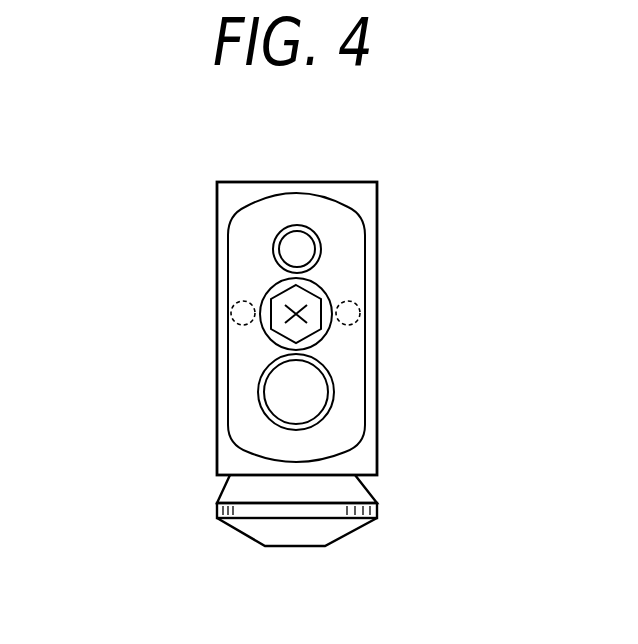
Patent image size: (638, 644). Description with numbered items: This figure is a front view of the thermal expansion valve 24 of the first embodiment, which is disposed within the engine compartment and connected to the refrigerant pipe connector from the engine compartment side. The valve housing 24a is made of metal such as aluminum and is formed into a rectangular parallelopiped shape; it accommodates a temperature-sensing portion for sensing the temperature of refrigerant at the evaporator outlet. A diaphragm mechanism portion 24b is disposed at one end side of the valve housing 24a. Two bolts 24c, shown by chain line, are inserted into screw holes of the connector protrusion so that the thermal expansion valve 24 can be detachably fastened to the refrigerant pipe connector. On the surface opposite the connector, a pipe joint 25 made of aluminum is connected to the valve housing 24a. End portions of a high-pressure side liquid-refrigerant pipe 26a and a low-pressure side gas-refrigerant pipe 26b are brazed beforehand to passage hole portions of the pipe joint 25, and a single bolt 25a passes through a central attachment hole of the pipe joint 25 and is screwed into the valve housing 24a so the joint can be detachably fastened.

The thermal expansion valve 24 is at (296, 392).
The valve housing 24a is at (218, 342).
The diaphragm mechanism portion 24b is at (235, 529).
The bolts 24c is at (242, 300).
The pipe joint 25 is at (345, 212).
The bolt 25a is at (318, 295).
The high-pressure side liquid-refrigerant pipe 26a is at (280, 233).
The low-pressure side gas-refrigerant pipe 26b is at (258, 389).